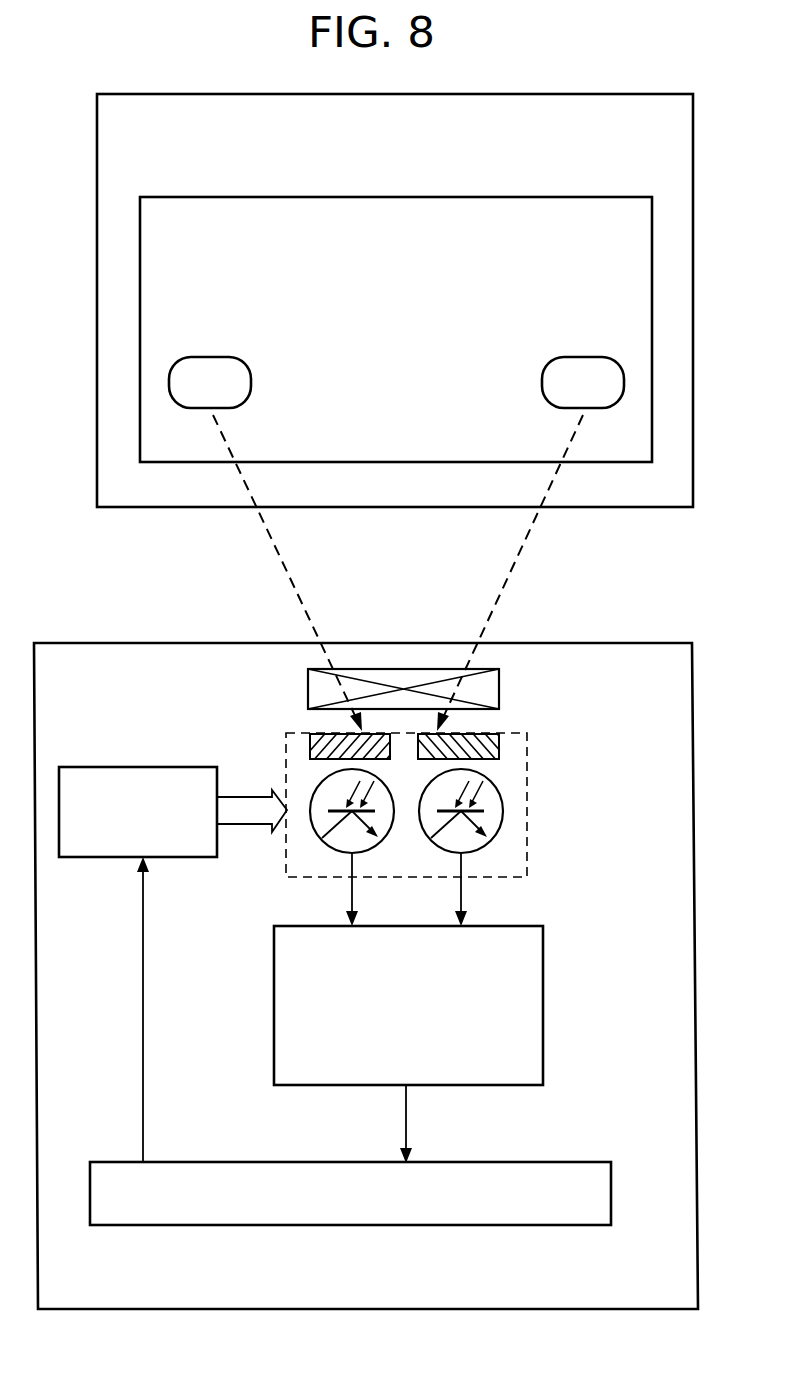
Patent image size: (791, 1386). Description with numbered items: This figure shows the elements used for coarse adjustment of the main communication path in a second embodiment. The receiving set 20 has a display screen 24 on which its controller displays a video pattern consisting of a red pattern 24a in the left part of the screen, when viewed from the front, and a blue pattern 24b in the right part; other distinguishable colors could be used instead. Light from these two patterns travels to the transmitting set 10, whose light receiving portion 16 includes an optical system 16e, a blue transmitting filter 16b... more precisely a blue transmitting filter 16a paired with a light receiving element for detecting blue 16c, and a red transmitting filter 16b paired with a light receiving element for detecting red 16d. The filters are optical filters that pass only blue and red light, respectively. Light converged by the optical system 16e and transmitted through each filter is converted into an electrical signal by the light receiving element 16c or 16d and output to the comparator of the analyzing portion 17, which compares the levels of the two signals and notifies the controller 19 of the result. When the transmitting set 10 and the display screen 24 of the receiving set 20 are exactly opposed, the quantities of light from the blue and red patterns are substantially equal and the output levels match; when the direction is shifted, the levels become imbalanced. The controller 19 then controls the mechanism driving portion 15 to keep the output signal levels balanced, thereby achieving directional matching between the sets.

The transmitting set 10 is at (630, 643).
The mechanism driving portion 15 is at (108, 767).
The light receiving portion 16 is at (527, 785).
The blue transmitting filter 16a is at (499, 748).
The red transmitting filter 16b is at (310, 748).
The light receiving element for detecting blue 16c is at (490, 848).
The light receiving element for detecting red 16d is at (328, 843).
The optical system 16e is at (499, 692).
The analyzing portion 17 is at (543, 975).
The controller 19 is at (575, 1162).
The receiving set 20 is at (148, 507).
The display screen 24 is at (600, 197).
The red pattern 24a is at (213, 357).
The blue pattern 24b is at (585, 357).